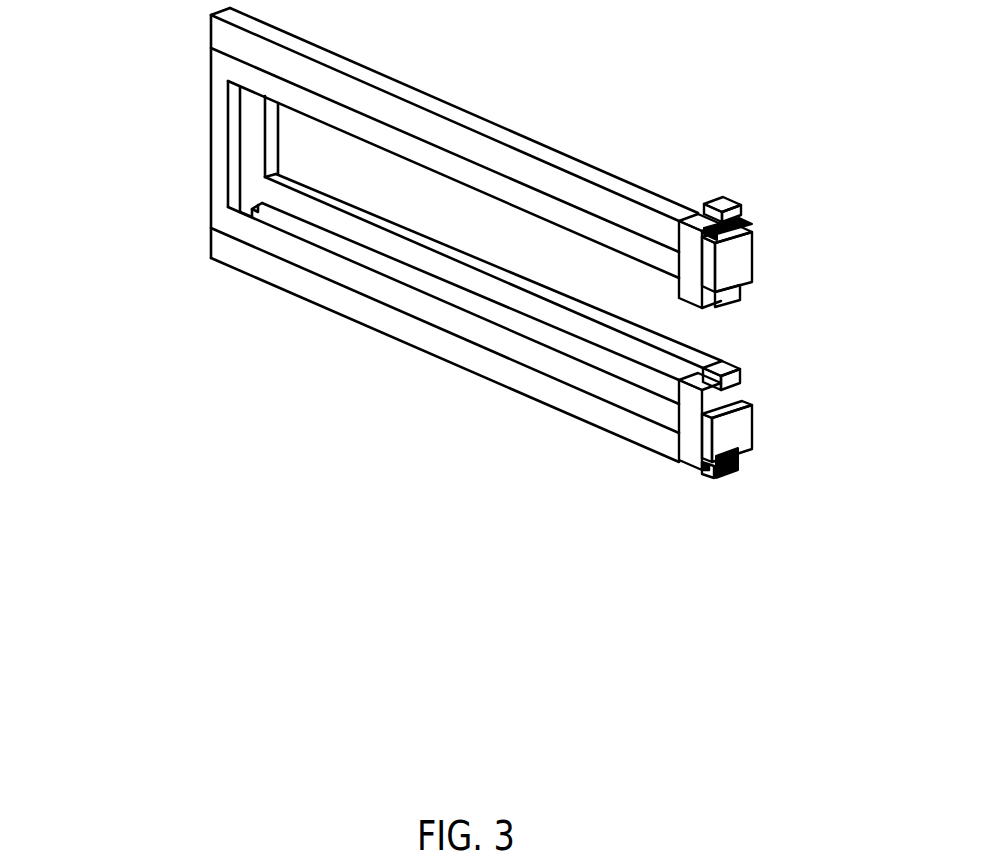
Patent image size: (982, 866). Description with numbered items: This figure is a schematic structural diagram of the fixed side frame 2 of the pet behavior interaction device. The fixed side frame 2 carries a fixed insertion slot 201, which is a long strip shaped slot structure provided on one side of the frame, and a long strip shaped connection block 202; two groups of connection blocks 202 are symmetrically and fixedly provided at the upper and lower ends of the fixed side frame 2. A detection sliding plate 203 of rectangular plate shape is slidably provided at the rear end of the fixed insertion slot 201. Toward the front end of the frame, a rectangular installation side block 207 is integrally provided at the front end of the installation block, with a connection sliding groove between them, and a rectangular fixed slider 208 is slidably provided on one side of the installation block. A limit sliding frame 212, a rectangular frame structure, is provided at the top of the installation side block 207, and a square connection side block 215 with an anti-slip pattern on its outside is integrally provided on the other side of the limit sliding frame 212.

The fixed side frame 2 is at (268, 243).
The fixed insertion slot 201 is at (295, 223).
The connection block 202 is at (448, 130).
The detection sliding plate 203 is at (250, 152).
The installation side block 207 is at (735, 272).
The fixed slider 208 is at (688, 243).
The limit sliding frame 212 is at (717, 467).
The connection side block 215 is at (742, 236).